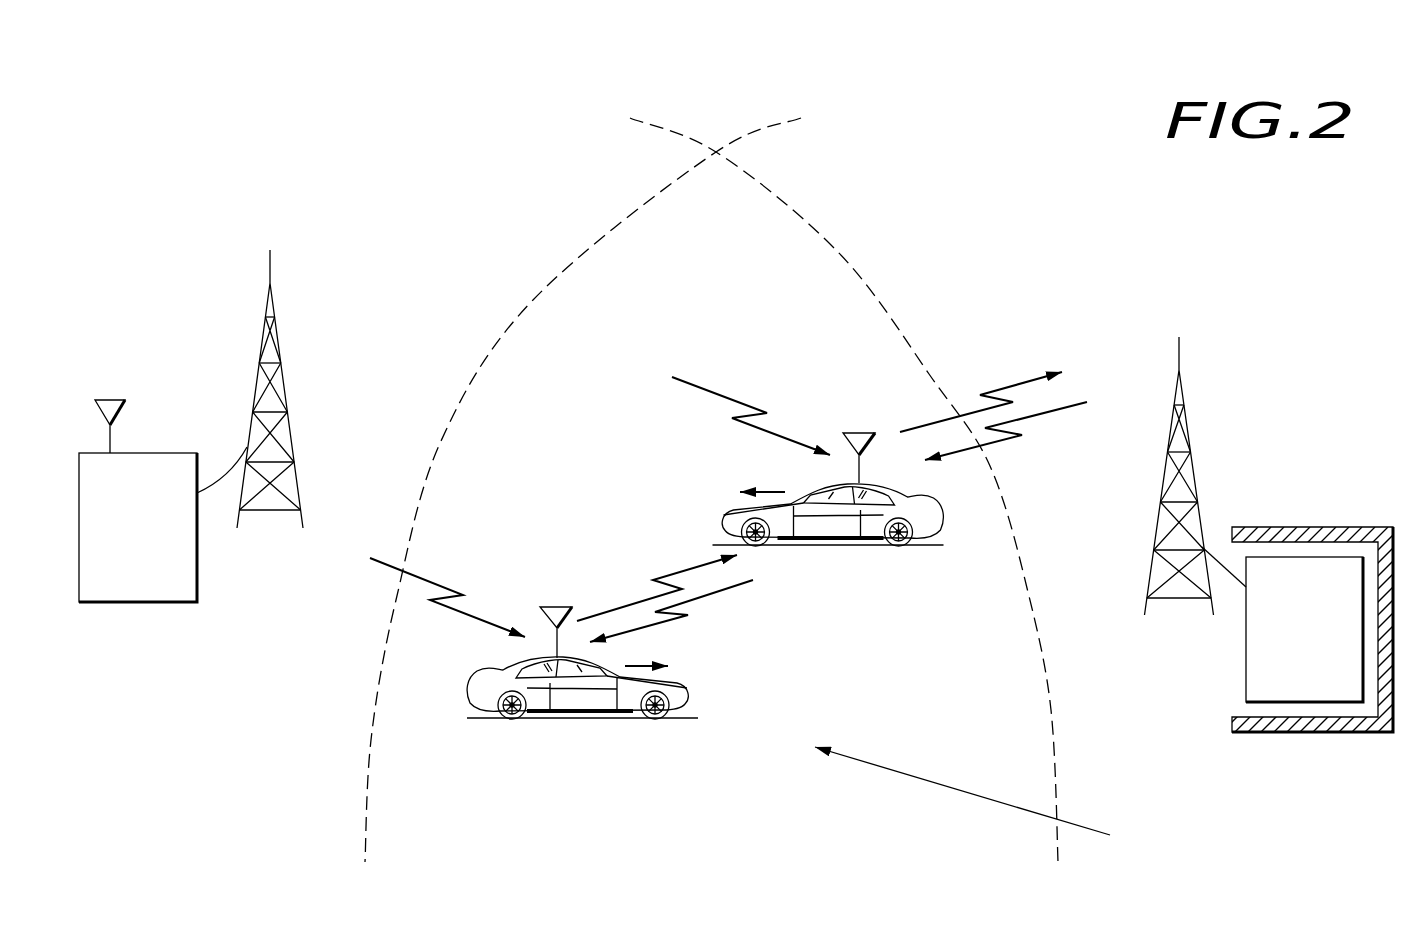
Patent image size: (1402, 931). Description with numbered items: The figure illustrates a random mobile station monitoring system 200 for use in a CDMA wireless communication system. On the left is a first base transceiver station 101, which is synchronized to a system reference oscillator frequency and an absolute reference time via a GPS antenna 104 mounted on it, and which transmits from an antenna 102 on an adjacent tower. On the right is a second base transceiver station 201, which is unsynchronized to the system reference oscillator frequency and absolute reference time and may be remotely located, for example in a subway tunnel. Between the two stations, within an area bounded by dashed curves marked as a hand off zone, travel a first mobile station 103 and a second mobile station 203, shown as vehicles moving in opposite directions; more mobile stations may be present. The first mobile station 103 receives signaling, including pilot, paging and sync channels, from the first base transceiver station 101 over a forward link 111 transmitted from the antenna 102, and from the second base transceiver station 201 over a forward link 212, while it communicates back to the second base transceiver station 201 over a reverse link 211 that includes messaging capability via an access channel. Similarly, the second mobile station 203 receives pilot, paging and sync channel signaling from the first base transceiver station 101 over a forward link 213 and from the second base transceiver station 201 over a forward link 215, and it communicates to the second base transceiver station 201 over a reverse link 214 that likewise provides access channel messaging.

The random mobile station monitoring system 200 is at (1280, 221).
The first base transceiver station 101 is at (197, 577).
The antenna 102 is at (262, 335).
The GPS antenna 104 is at (125, 407).
The first mobile station 103 is at (585, 710).
The forward link 111 is at (428, 580).
The reverse link 211 is at (608, 607).
The forward link 212 is at (703, 598).
The forward link 213 is at (730, 397).
The reverse link 214 is at (1007, 383).
The forward link 215 is at (1045, 417).
The second mobile station 203 is at (847, 530).
The second base transceiver station 201 is at (1246, 667).